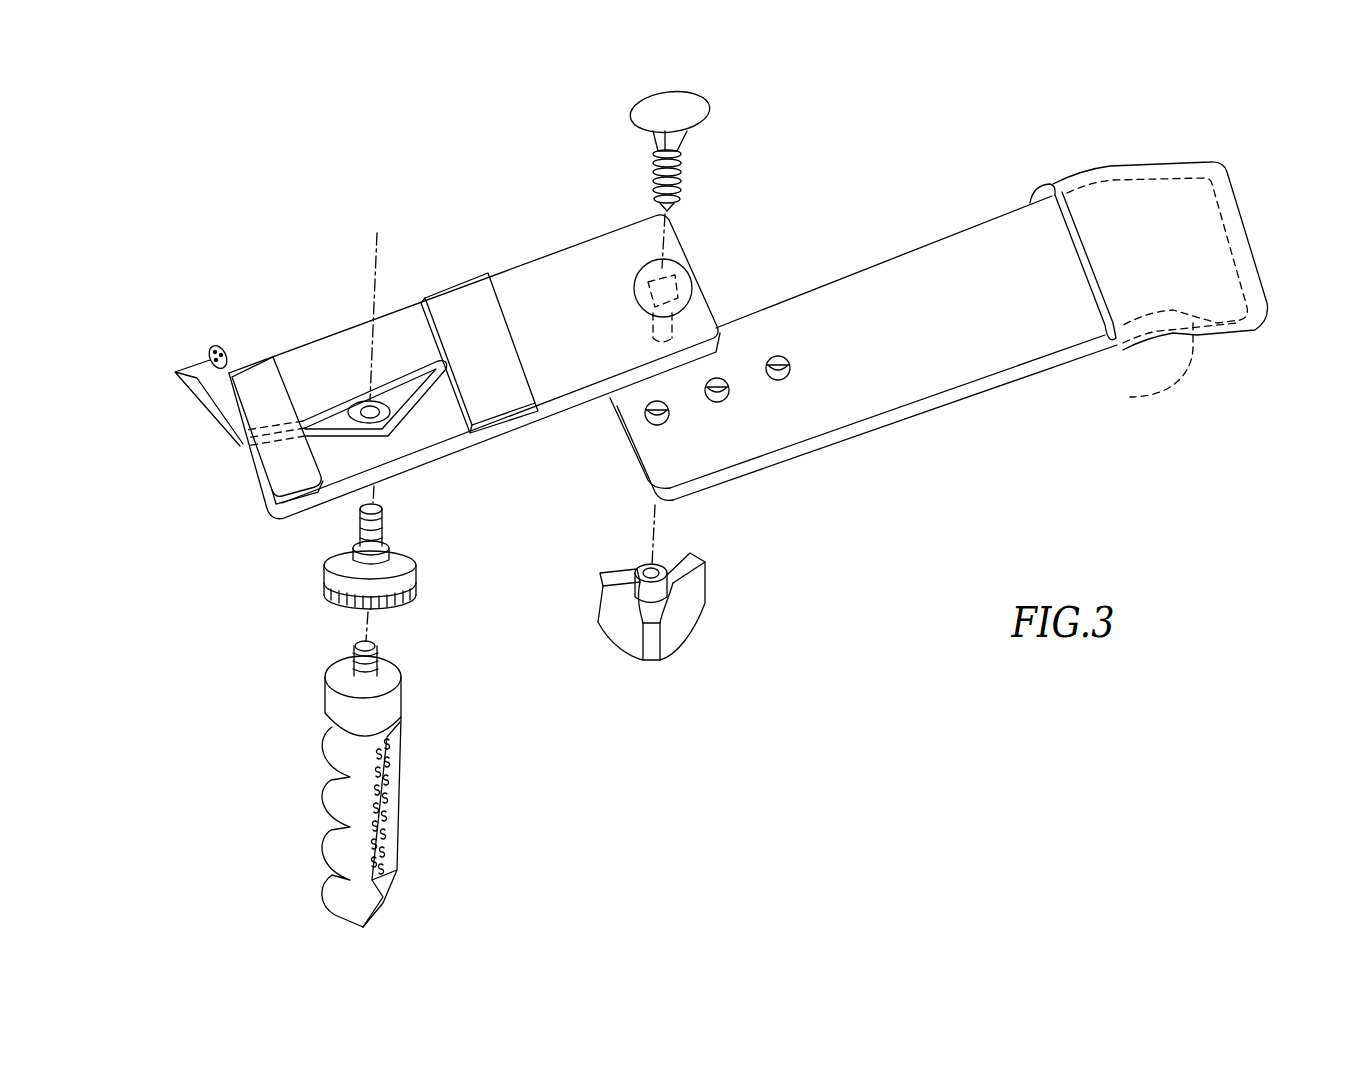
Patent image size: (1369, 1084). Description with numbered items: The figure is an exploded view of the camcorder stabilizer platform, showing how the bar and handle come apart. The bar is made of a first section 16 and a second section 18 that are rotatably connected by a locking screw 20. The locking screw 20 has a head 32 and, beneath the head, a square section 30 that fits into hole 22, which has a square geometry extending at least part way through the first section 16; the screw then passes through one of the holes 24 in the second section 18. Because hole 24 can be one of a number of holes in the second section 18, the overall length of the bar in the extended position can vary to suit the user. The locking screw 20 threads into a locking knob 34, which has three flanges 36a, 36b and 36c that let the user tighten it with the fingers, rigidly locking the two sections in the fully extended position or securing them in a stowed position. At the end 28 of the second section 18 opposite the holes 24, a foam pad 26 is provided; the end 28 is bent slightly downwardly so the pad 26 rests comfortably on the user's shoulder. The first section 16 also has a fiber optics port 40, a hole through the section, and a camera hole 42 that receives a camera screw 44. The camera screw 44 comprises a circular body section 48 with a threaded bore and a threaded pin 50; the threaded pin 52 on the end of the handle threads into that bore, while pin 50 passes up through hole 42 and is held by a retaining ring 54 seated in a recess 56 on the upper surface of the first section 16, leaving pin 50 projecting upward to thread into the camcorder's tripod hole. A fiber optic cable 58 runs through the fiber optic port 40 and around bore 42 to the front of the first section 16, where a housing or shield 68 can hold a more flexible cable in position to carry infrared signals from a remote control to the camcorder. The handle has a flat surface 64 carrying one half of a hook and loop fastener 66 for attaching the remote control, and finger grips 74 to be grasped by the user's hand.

The first section 16 is at (603, 253).
The second section 18 is at (930, 273).
The locking screw 20 is at (670, 149).
The hole 22 is at (673, 292).
The holes 24 is at (669, 413).
The foam pad 26 is at (1149, 267).
The end 28 is at (1145, 370).
The square section 30 is at (677, 144).
The head 32 is at (710, 113).
The locking knob 34 is at (662, 610).
The flange 36a is at (702, 560).
The flange 36b is at (598, 601).
The flange 36c is at (652, 663).
The fiber optics port 40 is at (438, 360).
The camera hole 42 is at (237, 431).
The camera screw 44 is at (366, 540).
The body section 48 is at (402, 566).
The threaded pin 50 is at (380, 507).
The threaded pin 52 is at (387, 660).
The retaining ring 54 is at (398, 545).
The recess 56 is at (358, 402).
The fiber optic cable 58 is at (412, 398).
The flat surface 64 is at (369, 769).
The hook and loop fastener 66 is at (396, 838).
The housing or shield 68 is at (225, 350).
The finger grips 74 is at (326, 807).